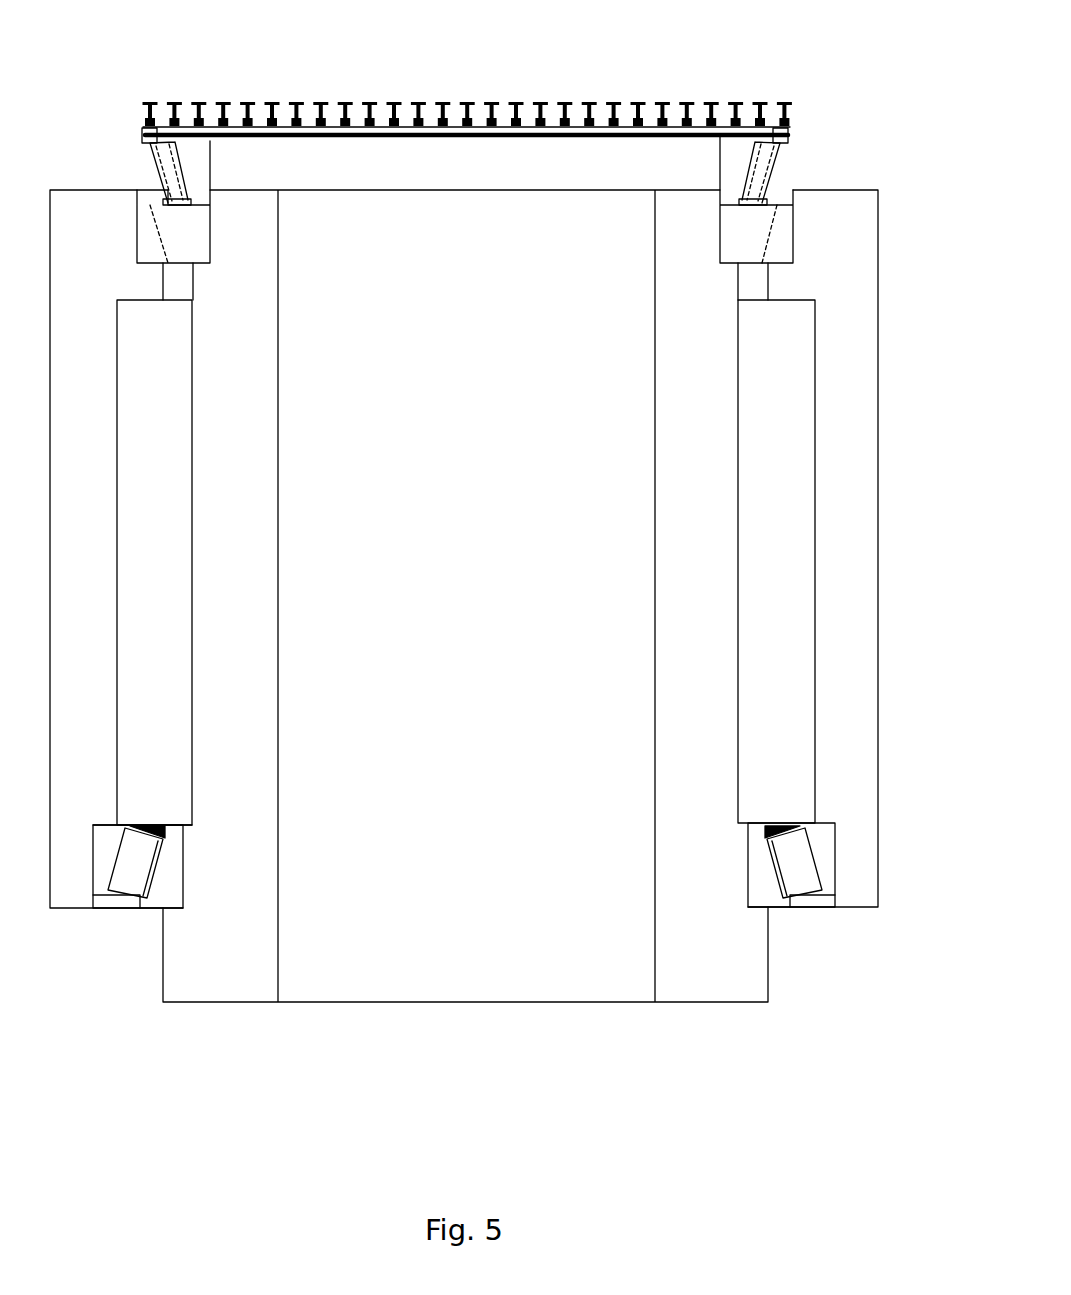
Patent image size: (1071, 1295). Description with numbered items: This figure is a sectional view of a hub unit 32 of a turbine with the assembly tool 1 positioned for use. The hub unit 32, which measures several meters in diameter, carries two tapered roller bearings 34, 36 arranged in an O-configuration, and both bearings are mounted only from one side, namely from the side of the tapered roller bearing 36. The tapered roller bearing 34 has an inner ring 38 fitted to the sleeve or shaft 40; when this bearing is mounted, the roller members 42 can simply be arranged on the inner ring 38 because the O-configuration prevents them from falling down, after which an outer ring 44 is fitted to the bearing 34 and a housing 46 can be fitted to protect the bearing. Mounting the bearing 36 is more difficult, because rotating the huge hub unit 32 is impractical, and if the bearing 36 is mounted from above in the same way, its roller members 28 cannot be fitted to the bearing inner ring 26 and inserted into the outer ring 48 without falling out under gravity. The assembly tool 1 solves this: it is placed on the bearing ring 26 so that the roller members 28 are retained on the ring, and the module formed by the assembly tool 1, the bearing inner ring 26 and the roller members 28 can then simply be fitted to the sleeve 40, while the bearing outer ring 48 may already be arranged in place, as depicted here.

The assembly tool 1 is at (606, 126).
The bearing inner ring 26 is at (727, 160).
The roller members 28 is at (757, 190).
The hub unit 32 is at (862, 58).
The tapered roller bearing 34 is at (844, 916).
The tapered roller bearing 36 is at (832, 166).
The inner ring 38 is at (770, 896).
The sleeve or shaft 40 is at (700, 982).
The roller members 42 is at (795, 882).
The outer ring 44 is at (828, 860).
The housing 46 is at (872, 880).
The bearing outer ring 48 is at (786, 242).